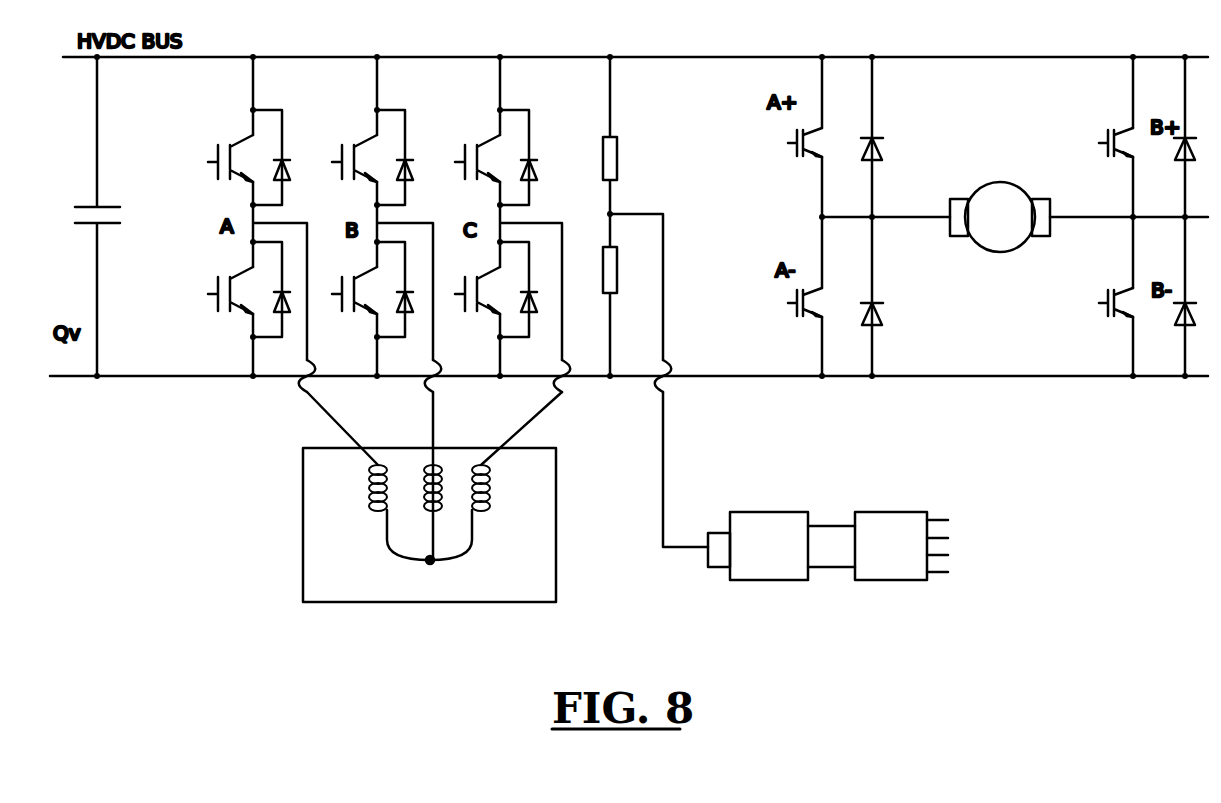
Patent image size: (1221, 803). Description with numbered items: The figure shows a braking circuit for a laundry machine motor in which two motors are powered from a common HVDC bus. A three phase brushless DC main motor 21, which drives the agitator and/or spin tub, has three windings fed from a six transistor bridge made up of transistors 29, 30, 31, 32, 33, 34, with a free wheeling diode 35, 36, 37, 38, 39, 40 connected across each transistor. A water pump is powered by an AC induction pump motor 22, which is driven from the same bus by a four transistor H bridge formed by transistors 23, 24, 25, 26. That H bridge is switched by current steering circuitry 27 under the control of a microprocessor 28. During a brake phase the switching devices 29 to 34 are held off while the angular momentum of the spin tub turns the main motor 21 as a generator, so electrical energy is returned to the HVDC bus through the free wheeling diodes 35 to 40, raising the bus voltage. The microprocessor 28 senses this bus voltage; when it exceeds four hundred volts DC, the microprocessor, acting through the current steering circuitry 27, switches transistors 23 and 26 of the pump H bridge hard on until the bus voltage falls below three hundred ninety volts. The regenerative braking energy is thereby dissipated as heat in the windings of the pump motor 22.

The three phase brushless DC main motor 21 is at (557, 552).
The pump motor 22 is at (1003, 182).
The H bridge transistor 23 is at (787, 152).
The H bridge transistor 24 is at (793, 315).
The H bridge transistor 25 is at (1110, 165).
The H bridge transistor 26 is at (1105, 318).
The current steering circuitry 27 is at (913, 512).
The microprocessor 28 is at (790, 512).
The bridge transistor 29 is at (230, 147).
The bridge transistor 30 is at (230, 306).
The bridge transistor 31 is at (354, 148).
The bridge transistor 32 is at (354, 306).
The bridge transistor 33 is at (477, 148).
The bridge transistor 34 is at (477, 306).
The free wheeling diode 35 is at (286, 162).
The free wheeling diode 36 is at (279, 289).
The free wheeling diode 37 is at (408, 158).
The free wheeling diode 38 is at (402, 289).
The free wheeling diode 39 is at (531, 158).
The free wheeling diode 40 is at (525, 289).